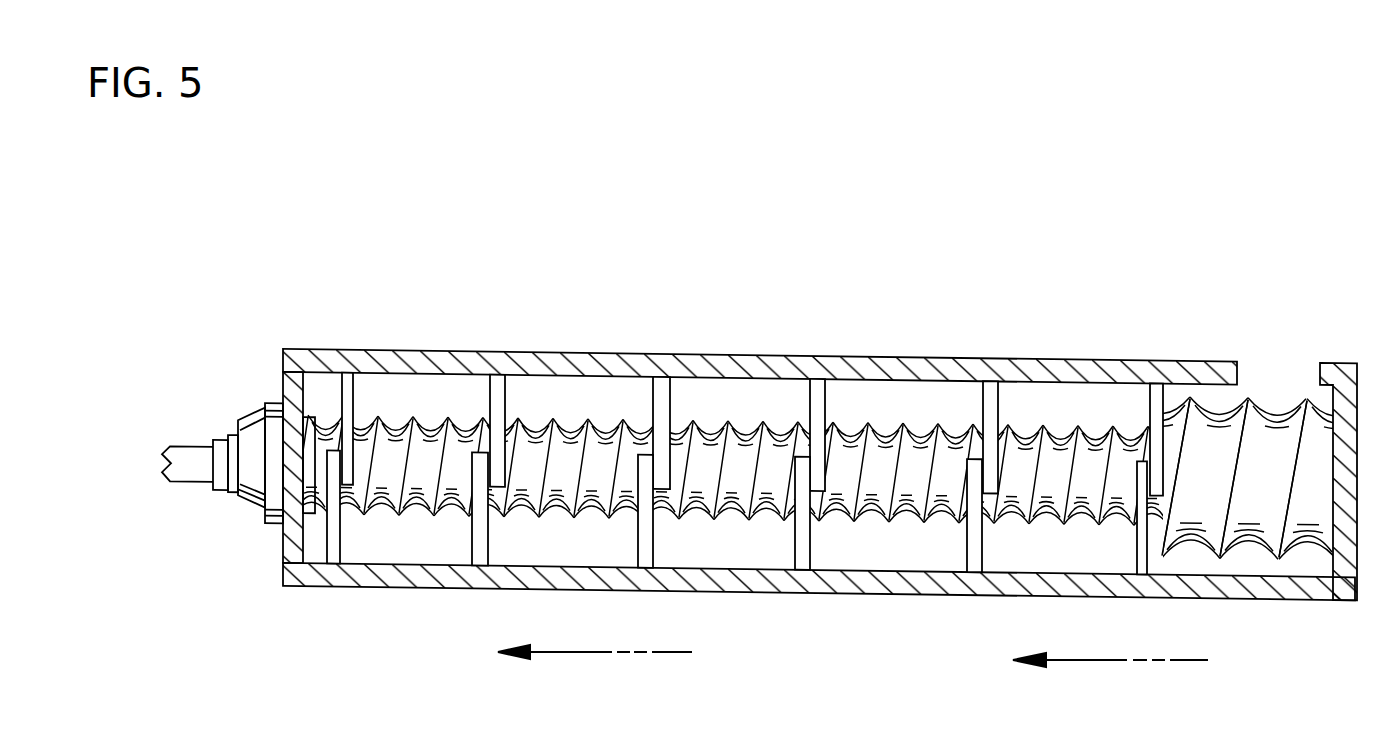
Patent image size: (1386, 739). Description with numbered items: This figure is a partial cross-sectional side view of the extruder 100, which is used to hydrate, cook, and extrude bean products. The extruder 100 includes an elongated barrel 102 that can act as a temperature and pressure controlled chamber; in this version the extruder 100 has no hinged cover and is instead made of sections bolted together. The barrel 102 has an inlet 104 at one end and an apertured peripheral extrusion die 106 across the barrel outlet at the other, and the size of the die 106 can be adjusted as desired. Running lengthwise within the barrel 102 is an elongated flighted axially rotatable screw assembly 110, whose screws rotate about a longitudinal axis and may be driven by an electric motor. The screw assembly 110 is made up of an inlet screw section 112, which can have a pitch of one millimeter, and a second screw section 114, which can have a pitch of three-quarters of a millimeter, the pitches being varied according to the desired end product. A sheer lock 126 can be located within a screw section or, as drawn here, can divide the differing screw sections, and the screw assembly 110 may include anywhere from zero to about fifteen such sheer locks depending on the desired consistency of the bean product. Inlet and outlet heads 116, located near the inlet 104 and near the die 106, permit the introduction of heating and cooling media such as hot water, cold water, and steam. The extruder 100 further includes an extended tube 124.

The extruder 100 is at (252, 280).
The barrel 102 is at (442, 369).
The inlet 104 is at (1280, 348).
The apertured peripheral extrusion die 106 is at (232, 434).
The screw assembly 110 is at (1167, 502).
The inlet screw section 112 is at (1237, 525).
The second screw section 114 is at (1047, 499).
The inlet and outlet heads 116 is at (218, 445).
The extended tube 124 is at (187, 450).
The sheer lock 126 is at (818, 379).